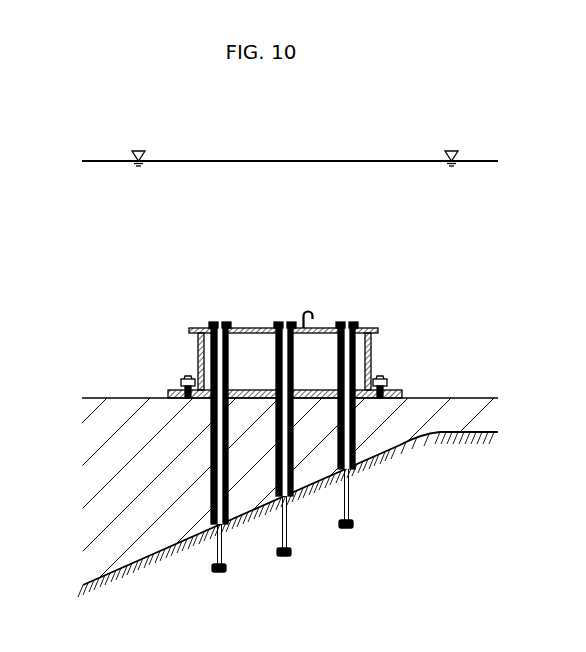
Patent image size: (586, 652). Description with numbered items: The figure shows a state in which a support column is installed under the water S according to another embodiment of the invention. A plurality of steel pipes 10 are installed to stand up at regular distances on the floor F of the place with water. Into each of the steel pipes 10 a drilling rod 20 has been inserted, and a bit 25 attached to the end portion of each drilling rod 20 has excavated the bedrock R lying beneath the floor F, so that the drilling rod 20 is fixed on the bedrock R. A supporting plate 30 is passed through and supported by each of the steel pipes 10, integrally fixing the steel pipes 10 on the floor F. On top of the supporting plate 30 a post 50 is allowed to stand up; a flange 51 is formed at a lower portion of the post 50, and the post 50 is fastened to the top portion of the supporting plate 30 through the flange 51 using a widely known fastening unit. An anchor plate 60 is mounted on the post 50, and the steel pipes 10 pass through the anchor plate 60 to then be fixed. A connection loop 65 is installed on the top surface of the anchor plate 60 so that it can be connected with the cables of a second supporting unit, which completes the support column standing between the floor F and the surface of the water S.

The steel pipe 10 is at (228, 357).
The drilling rod 20 is at (225, 343).
The bit 25 is at (355, 524).
The supporting plate 30 is at (402, 391).
The post 50 is at (198, 347).
The flange 51 is at (382, 379).
The anchor plate 60 is at (202, 328).
The connection loop 65 is at (302, 308).
The water S is at (102, 159).
The floor F is at (110, 397).
The bedrock R is at (140, 562).